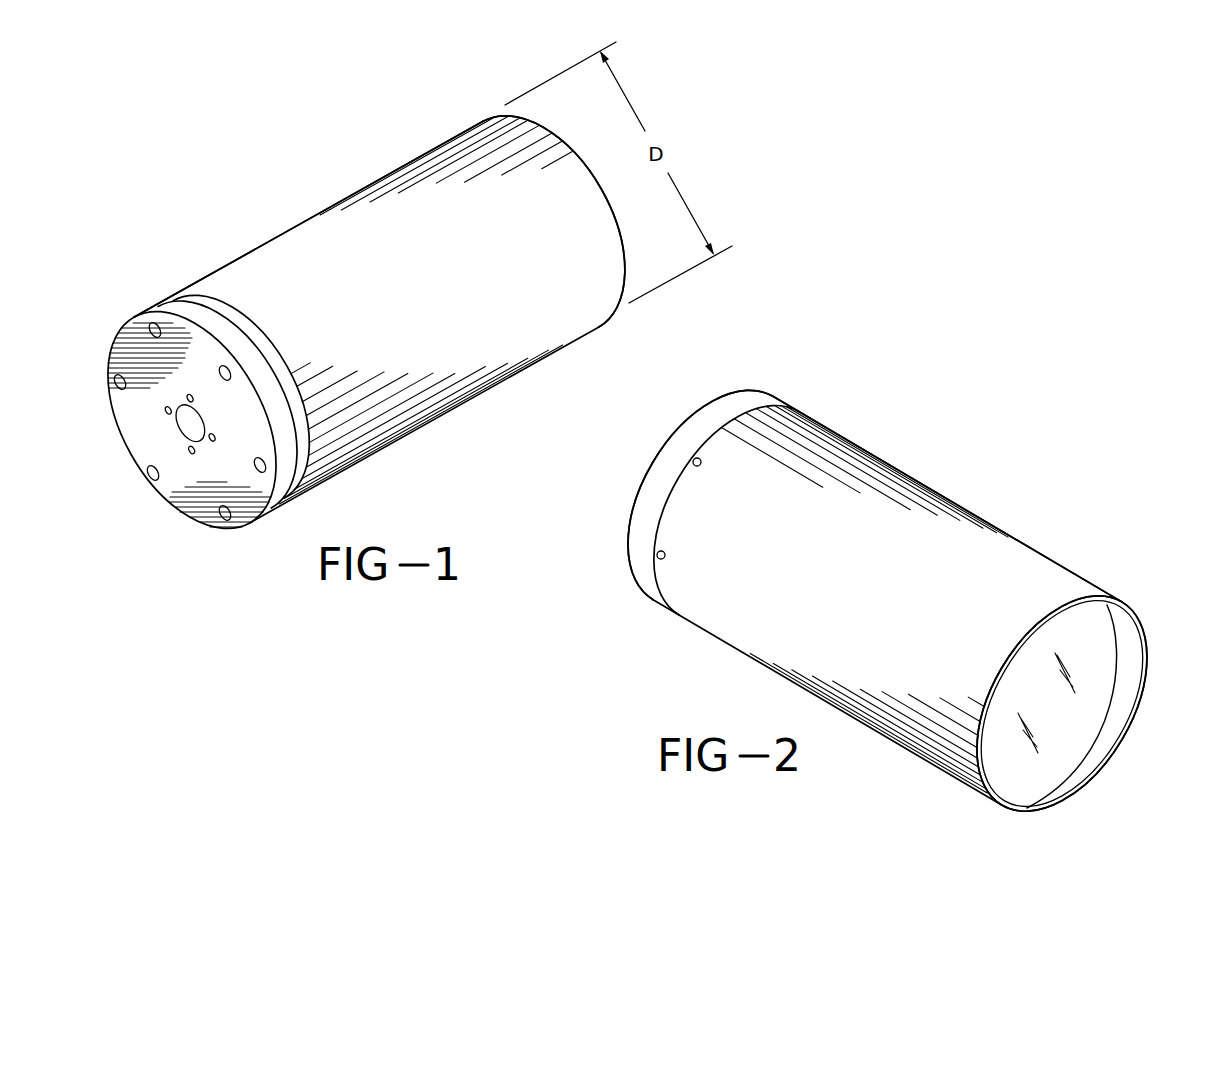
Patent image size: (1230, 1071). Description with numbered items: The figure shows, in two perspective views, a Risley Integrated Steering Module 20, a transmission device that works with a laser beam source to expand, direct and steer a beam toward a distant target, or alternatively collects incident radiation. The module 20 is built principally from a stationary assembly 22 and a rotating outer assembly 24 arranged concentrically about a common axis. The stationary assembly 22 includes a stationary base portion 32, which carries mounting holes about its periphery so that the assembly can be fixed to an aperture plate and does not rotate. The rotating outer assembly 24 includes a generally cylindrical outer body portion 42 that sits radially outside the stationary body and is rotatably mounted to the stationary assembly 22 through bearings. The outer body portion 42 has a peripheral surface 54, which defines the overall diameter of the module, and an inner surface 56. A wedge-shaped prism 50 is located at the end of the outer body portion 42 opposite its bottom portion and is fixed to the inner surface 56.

In FIG. 1, the Risley Integrated Steering Module 20 is at (158, 174).
In FIG. 2, the Risley Integrated Steering Module 20 is at (948, 386).
In FIG. 1, the stationary assembly 22 is at (133, 305).
In FIG. 2, the stationary assembly 22 is at (787, 390).
In FIG. 1, the rotating outer assembly 24 is at (327, 190).
In FIG. 2, the rotating outer assembly 24 is at (1036, 525).
In FIG. 1, the stationary base portion 32 is at (150, 448).
In FIG. 2, the stationary base portion 32 is at (637, 542).
In FIG. 1, the outer body portion 42 is at (233, 263).
In FIG. 2, the outer body portion 42 is at (945, 498).
In FIG. 1, the peripheral surface 54 is at (293, 257).
In FIG. 2, the peripheral surface 54 is at (848, 500).
In FIG. 2, the wedge-shaped prism 50 is at (1037, 778).
In FIG. 2, the inner surface 56 is at (1130, 663).